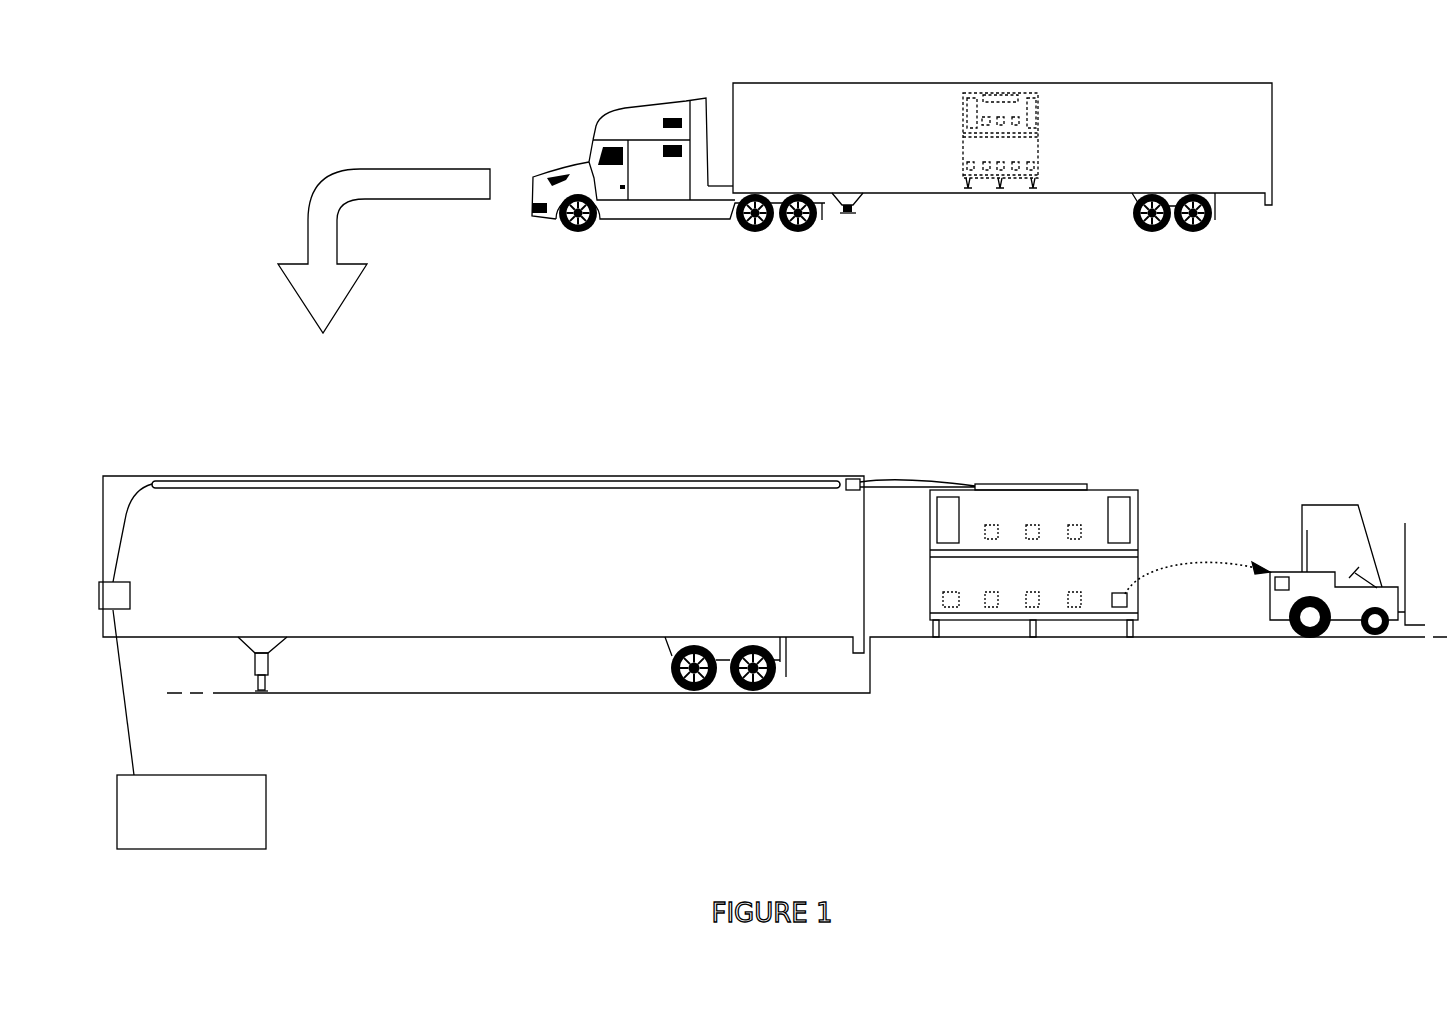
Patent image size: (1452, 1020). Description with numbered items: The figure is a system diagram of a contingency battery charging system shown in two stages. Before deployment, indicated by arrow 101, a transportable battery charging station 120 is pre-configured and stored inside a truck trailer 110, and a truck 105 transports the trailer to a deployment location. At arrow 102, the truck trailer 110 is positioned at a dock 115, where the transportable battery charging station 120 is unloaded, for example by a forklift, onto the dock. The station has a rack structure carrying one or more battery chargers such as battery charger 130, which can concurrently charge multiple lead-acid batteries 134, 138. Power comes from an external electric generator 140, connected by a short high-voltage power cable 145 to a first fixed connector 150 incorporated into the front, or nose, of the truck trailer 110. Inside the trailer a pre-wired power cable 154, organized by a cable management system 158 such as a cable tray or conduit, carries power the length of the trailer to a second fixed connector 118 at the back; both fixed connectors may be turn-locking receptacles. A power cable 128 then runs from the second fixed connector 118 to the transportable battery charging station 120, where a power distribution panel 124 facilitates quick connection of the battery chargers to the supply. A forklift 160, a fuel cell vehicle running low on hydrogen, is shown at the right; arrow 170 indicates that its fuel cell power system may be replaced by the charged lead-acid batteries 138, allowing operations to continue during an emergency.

The arrow 101 is at (522, 67).
The arrow 102 is at (184, 362).
The truck 105 is at (676, 96).
The truck trailer 110 is at (902, 81).
The dock 115 is at (882, 648).
The second fixed connector 118 is at (858, 479).
The transportable battery charging station 120 is at (1022, 93).
The power distribution panel 124 is at (1015, 484).
The power cable 128 is at (935, 478).
The battery charger 130 is at (1131, 505).
The lead-acid batteries 134 is at (953, 607).
The lead-acid batteries 138 is at (1118, 607).
The generator 140 is at (257, 775).
The generator cable 145 is at (135, 753).
The first fixed connector 150 is at (130, 598).
The power cable 154 is at (130, 533).
The cable management system 158 is at (325, 482).
The forklift 160 is at (1336, 505).
The arrow 170 is at (1226, 562).